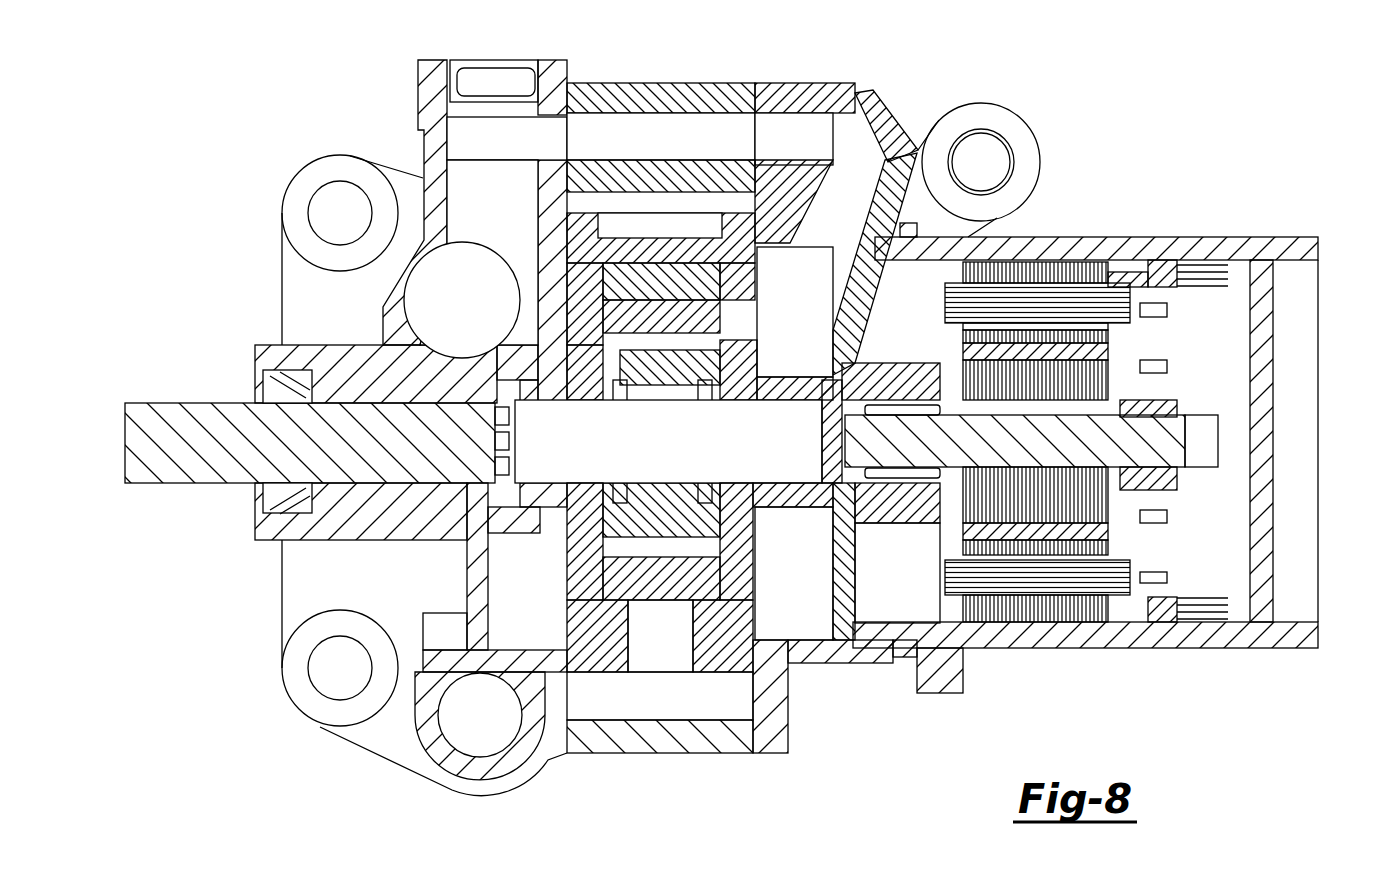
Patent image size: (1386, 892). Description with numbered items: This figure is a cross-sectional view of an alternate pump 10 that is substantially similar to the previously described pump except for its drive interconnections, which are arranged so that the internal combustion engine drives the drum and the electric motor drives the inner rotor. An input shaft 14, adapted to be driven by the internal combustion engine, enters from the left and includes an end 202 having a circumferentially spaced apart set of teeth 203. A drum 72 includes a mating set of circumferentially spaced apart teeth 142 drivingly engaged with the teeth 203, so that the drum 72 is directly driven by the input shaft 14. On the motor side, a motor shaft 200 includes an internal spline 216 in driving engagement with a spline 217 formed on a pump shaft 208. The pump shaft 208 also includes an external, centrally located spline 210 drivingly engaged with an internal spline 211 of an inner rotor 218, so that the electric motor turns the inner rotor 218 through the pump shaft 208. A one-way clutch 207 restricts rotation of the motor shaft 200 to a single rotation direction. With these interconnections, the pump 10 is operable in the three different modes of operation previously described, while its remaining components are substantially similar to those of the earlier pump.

The pump 10 is at (1033, 95).
The input shaft 14 is at (172, 402).
The teeth 142 is at (470, 378).
The drum 72 is at (560, 372).
The internal spline 211 is at (640, 400).
The inner rotor 218 is at (655, 425).
The pump shaft 208 is at (697, 440).
The spline 217 is at (813, 393).
The motor shaft 200 is at (1147, 440).
The external spline 210 is at (620, 483).
The internal spline 216 is at (833, 497).
The one-way clutch 207 is at (902, 480).
The end 202 is at (498, 507).
The teeth 203 is at (568, 493).